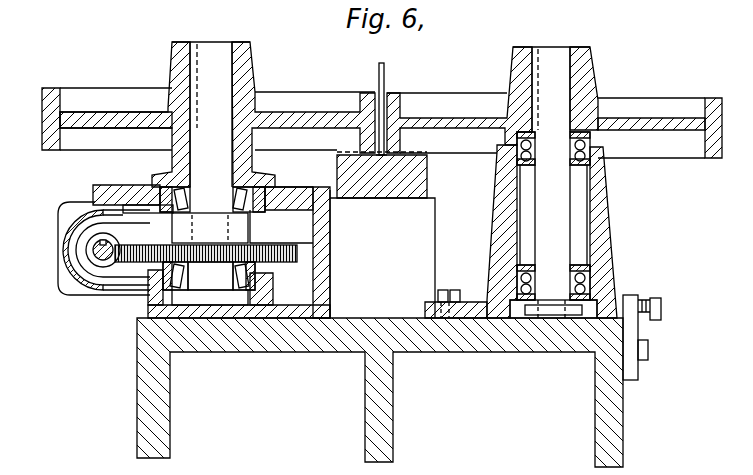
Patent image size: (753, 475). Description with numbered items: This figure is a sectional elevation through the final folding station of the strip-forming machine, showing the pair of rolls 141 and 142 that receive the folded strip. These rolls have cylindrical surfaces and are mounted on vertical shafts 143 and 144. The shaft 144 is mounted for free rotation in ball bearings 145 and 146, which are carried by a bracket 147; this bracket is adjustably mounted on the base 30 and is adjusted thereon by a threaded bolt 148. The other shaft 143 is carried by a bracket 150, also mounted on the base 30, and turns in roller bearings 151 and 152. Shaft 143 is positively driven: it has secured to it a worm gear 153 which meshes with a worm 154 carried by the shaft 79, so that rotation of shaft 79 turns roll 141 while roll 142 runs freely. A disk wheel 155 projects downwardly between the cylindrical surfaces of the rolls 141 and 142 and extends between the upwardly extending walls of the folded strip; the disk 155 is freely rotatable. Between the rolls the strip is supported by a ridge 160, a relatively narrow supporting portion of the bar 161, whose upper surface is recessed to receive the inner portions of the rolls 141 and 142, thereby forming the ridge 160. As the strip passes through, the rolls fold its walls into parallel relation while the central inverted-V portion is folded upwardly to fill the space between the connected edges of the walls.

The base 30 is at (620, 426).
The shaft 79 is at (95, 246).
The roll 141 is at (86, 88).
The roll 142 is at (690, 97).
The vertical shaft 143 is at (215, 165).
The vertical shaft 144 is at (557, 212).
The ball bearing 145 is at (580, 162).
The ball bearing 146 is at (583, 280).
The bracket 147 is at (598, 242).
The threaded bolt 148 is at (661, 307).
The bracket 150 is at (160, 305).
The roller bearing 151 is at (163, 187).
The roller bearing 152 is at (176, 268).
The worm gear 153 is at (297, 256).
The worm 154 is at (93, 268).
The disk wheel 155 is at (386, 73).
The ridge 160 is at (428, 186).
The bar 161 is at (383, 150).